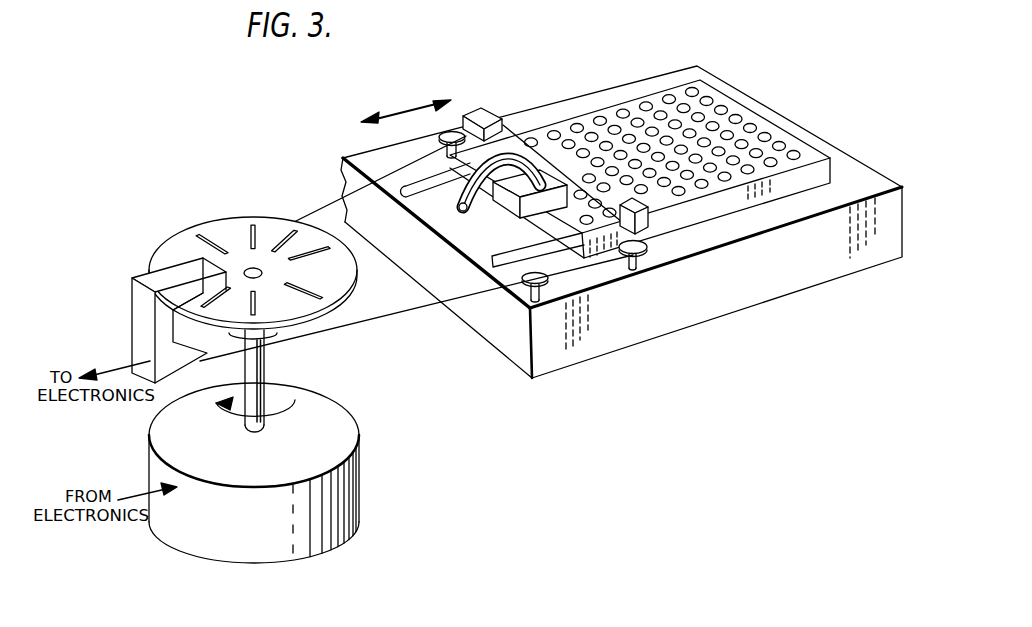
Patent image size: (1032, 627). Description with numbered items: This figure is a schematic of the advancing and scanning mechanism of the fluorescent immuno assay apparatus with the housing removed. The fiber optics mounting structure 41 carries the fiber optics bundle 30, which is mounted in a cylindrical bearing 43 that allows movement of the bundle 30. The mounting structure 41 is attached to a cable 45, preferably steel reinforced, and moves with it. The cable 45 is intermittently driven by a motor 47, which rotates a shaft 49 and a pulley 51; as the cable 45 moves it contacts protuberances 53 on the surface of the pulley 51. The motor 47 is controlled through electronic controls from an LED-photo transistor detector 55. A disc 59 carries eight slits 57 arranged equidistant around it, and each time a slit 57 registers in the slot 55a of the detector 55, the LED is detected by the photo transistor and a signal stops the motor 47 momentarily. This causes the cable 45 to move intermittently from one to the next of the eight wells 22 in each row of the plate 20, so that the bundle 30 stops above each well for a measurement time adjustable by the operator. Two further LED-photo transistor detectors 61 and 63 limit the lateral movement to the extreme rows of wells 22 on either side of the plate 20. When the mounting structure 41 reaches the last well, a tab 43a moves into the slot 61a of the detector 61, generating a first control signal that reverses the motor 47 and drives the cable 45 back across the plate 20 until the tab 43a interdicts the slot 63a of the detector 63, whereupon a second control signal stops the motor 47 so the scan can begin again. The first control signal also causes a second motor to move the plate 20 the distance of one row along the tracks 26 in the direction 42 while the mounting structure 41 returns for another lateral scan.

The plate 20 is at (815, 150).
The wells 22 is at (720, 106).
The tracks 26 is at (681, 242).
The fiber optics bundle 30 is at (460, 200).
The fiber optics mounting structure 41 is at (512, 215).
The direction 42 is at (398, 113).
The cylindrical bearing 43 is at (535, 170).
The tab 43a is at (566, 172).
The cable 45 is at (386, 313).
The motor 47 is at (359, 491).
The shaft 49 is at (265, 364).
The pulley 51 is at (300, 331).
The protuberances 53 is at (272, 337).
The LED-photo transistor detector 55 is at (143, 276).
The slot 55a is at (180, 330).
The slits 57 is at (207, 237).
The disc 59 is at (253, 266).
The LED-photo transistor detector 61 is at (480, 109).
The slot 61a is at (463, 128).
The LED-photo transistor detector 63 is at (673, 219).
The slot 63a is at (640, 248).